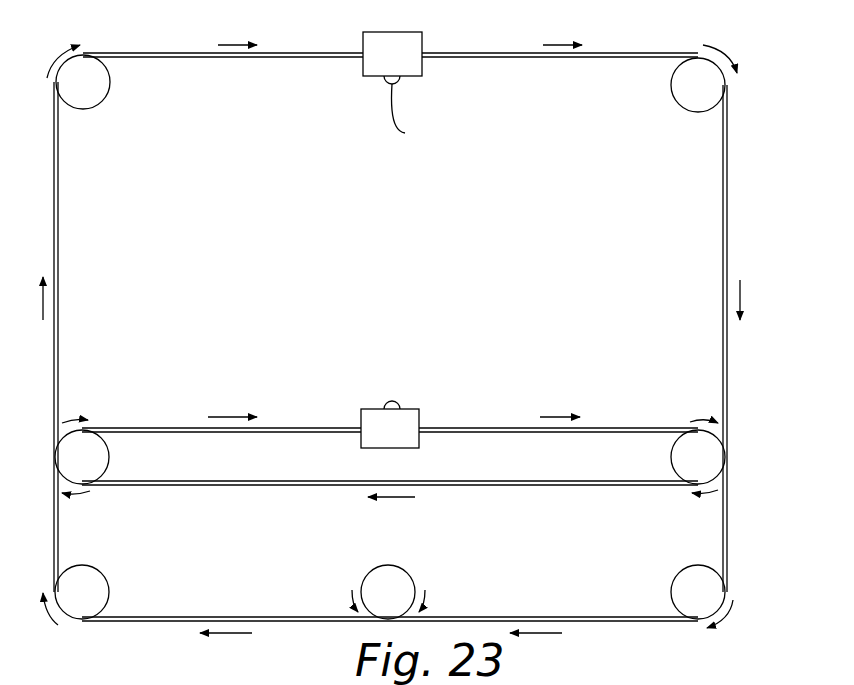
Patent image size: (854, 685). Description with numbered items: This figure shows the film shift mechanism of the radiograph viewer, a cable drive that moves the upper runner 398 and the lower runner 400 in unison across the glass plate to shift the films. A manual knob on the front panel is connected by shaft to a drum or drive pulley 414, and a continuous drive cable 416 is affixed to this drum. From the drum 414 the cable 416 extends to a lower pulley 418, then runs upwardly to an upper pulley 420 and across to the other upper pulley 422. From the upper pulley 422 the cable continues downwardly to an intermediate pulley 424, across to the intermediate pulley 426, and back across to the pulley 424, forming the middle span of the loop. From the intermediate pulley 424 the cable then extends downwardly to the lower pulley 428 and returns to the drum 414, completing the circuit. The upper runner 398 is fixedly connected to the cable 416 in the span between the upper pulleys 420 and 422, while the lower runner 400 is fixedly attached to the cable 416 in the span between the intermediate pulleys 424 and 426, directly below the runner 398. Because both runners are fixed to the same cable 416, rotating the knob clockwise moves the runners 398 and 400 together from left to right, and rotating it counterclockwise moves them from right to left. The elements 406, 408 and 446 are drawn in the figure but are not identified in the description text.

The upper runner 398 is at (414, 65).
The lower runner 400 is at (370, 418).
The sensor 406 is at (421, 116).
The sensor 408 is at (398, 402).
The drum or drive pulley 414 is at (408, 582).
The continuous drive cable 416 is at (323, 36).
The lower pulley 418 is at (92, 585).
The upper pulley 420 is at (97, 90).
The upper pulley 422 is at (693, 97).
The intermediate pulley 424 is at (713, 462).
The intermediate pulley 426 is at (98, 465).
The lower pulley 428 is at (707, 590).
The belt 446 is at (226, 616).